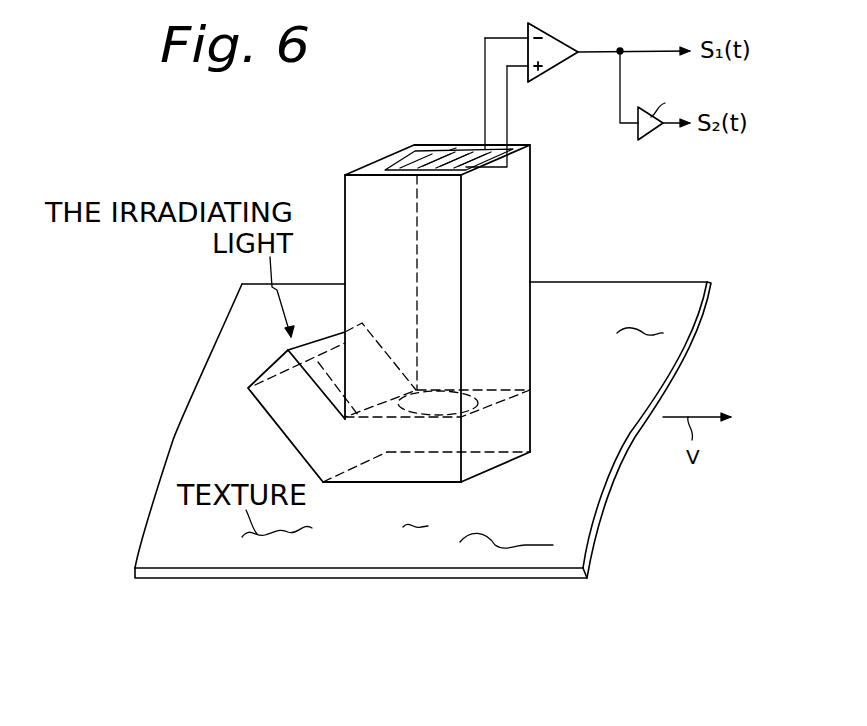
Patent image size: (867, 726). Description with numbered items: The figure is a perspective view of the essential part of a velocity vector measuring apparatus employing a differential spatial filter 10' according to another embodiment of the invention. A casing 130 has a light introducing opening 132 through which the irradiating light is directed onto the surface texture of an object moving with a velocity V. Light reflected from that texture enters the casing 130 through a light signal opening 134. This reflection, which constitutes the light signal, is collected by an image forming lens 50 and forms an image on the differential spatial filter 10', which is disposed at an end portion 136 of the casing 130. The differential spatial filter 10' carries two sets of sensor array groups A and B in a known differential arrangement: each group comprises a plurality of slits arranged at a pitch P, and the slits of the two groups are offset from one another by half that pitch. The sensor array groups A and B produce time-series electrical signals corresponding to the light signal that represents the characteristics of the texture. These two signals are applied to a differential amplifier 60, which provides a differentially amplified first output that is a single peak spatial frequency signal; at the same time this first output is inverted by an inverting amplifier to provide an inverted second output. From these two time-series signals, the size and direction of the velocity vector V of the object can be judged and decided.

The differential spatial filter 10' is at (452, 260).
The casing 130 is at (531, 228).
The light introducing opening 132 is at (264, 372).
The light signal opening 134 is at (413, 482).
The end portion 136 is at (522, 144).
The image forming lens 50 is at (503, 386).
The differential amplifier 60 is at (580, 29).
The sensor array group A is at (434, 176).
The sensor array group B is at (453, 146).